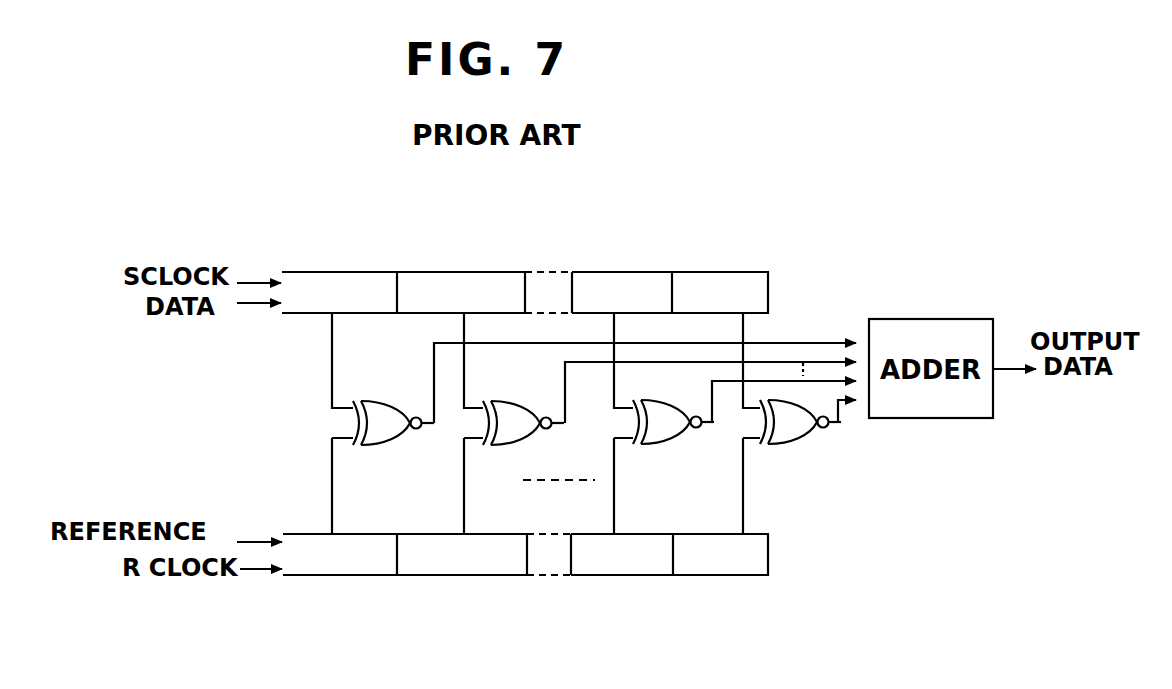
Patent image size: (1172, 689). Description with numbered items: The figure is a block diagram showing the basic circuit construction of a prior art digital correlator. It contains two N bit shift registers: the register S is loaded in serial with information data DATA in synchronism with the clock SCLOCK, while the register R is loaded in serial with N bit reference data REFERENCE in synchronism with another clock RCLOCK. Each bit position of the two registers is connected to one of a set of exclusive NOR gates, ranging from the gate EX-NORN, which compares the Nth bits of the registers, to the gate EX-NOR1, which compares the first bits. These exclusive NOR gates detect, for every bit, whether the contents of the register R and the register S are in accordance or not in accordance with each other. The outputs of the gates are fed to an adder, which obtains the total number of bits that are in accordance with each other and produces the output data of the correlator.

The N bit shift register S is at (451, 262).
The N bit shift register R is at (464, 583).
The exclusive NOR gate EX-NORN is at (369, 447).
The exclusive NOR gate EX-NOR1 is at (797, 446).